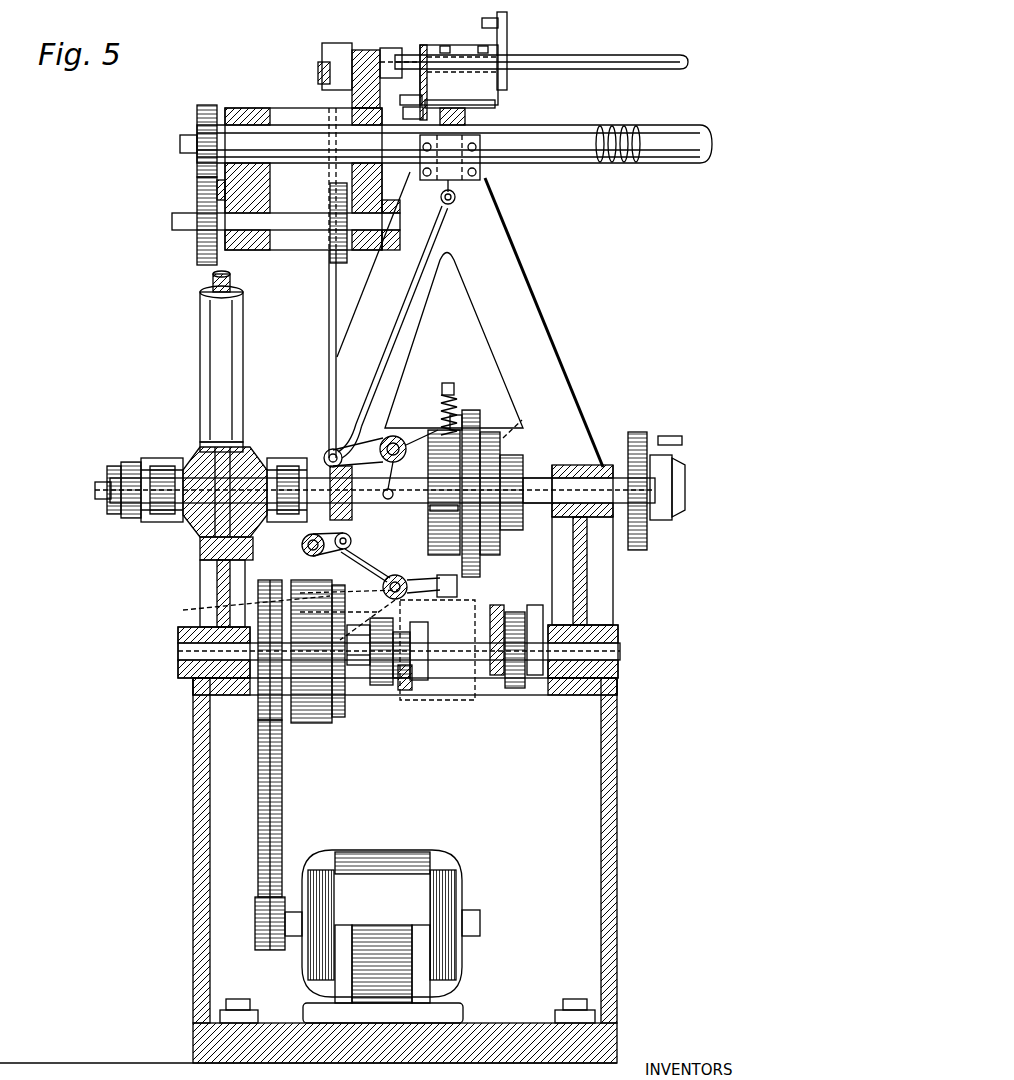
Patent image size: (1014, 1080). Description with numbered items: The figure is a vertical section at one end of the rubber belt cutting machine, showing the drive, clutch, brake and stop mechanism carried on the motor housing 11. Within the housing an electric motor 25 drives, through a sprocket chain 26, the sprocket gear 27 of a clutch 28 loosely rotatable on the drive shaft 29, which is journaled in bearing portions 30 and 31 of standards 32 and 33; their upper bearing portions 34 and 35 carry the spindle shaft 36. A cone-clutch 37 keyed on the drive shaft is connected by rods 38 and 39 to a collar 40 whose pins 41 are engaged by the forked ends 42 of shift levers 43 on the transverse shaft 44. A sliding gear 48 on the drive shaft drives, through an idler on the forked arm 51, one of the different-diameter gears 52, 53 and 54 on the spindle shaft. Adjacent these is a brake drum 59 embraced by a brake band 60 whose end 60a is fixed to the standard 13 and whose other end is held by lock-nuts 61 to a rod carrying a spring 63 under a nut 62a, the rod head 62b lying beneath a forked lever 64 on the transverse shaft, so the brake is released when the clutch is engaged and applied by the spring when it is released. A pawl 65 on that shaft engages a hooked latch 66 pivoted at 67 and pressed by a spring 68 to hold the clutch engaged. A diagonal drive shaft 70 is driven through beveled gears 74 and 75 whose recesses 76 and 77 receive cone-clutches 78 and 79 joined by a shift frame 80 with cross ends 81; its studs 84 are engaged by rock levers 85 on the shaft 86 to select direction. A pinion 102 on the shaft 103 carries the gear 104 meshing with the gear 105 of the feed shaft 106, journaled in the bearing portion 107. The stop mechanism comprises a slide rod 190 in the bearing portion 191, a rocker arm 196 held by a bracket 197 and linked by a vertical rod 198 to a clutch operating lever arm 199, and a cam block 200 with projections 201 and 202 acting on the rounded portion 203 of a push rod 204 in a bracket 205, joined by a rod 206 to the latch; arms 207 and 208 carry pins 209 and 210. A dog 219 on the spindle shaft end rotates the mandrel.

The motor housing 11 is at (600, 798).
The vertical standard 13 is at (526, 283).
The electric motor 25 is at (442, 878).
The sprocket chain 26 is at (261, 800).
The sprocket gear 27 is at (252, 722).
The clutch 28 is at (308, 724).
The drive shaft 29 is at (398, 680).
The bearing portion 30 is at (198, 678).
The bearing portion 31 is at (620, 668).
The standard 32 is at (216, 592).
The standard 33 is at (600, 588).
The bearing portion 34 is at (200, 540).
The bearing portion 35 is at (600, 516).
The spindle shaft 36 is at (95, 488).
The cone-clutch 37 is at (338, 718).
The rod 38 is at (356, 686).
The rod 39 is at (360, 626).
The collar 40 is at (405, 690).
The pins 41 is at (420, 697).
The forked ends 42 is at (426, 638).
The shift levers 43 is at (418, 607).
The transverse shaft 44 is at (390, 576).
The gear 48 is at (514, 614).
The forked arm 51 is at (496, 605).
The gear 52 is at (508, 457).
The gear 53 is at (488, 432).
The gear 54 is at (470, 408).
The brake drum 59 is at (430, 535).
The brake band 60 is at (456, 415).
The secured end of brake band 60a is at (522, 420).
The lock-nuts 61 is at (432, 513).
The nut 62a is at (450, 382).
The head 62b is at (448, 598).
The spring 63 is at (435, 422).
The forked lever 64 is at (420, 578).
The pawl 65 is at (349, 580).
The hooked latch 66 is at (308, 566).
The pivot 67 is at (302, 545).
The spring 68 is at (243, 609).
The drive shaft 70 is at (212, 357).
The beveled gear 74 is at (190, 455).
The beveled gear 75 is at (268, 462).
The clutch engaging recess 76 is at (152, 472).
The clutch engaging recess 77 is at (297, 470).
The cone-clutch 78 is at (128, 520).
The cone-clutch 79 is at (326, 453).
The shift frame 80 is at (165, 477).
The cross ends 81 is at (115, 465).
The studs 84 is at (388, 500).
The rock levers 85 is at (374, 446).
The shaft 86 is at (399, 440).
The pinion 102 is at (336, 248).
The shaft 103 is at (175, 232).
The gear 104 is at (205, 253).
The gear 105 is at (205, 162).
The feed shaft 106 is at (282, 137).
The bearing portion 107 is at (242, 95).
The slide rod 190 is at (604, 53).
The bearing portion 191 is at (385, 50).
The rocker arm 196 is at (345, 52).
The bracket 197 is at (325, 44).
The vertical rod 198 is at (329, 318).
The clutch operating lever arm 199 is at (378, 403).
The cam block 200 is at (458, 62).
The cam projection 201 is at (600, 127).
The cam projection 202 is at (423, 116).
The rounded portion 203 is at (497, 108).
The push rod 204 is at (484, 184).
The bracket 205 is at (487, 172).
The rod 206 is at (420, 262).
The arm 207 is at (508, 50).
The arm 208 is at (422, 94).
The pin 209 is at (499, 21).
The pin 210 is at (445, 108).
The dog 219 is at (670, 436).